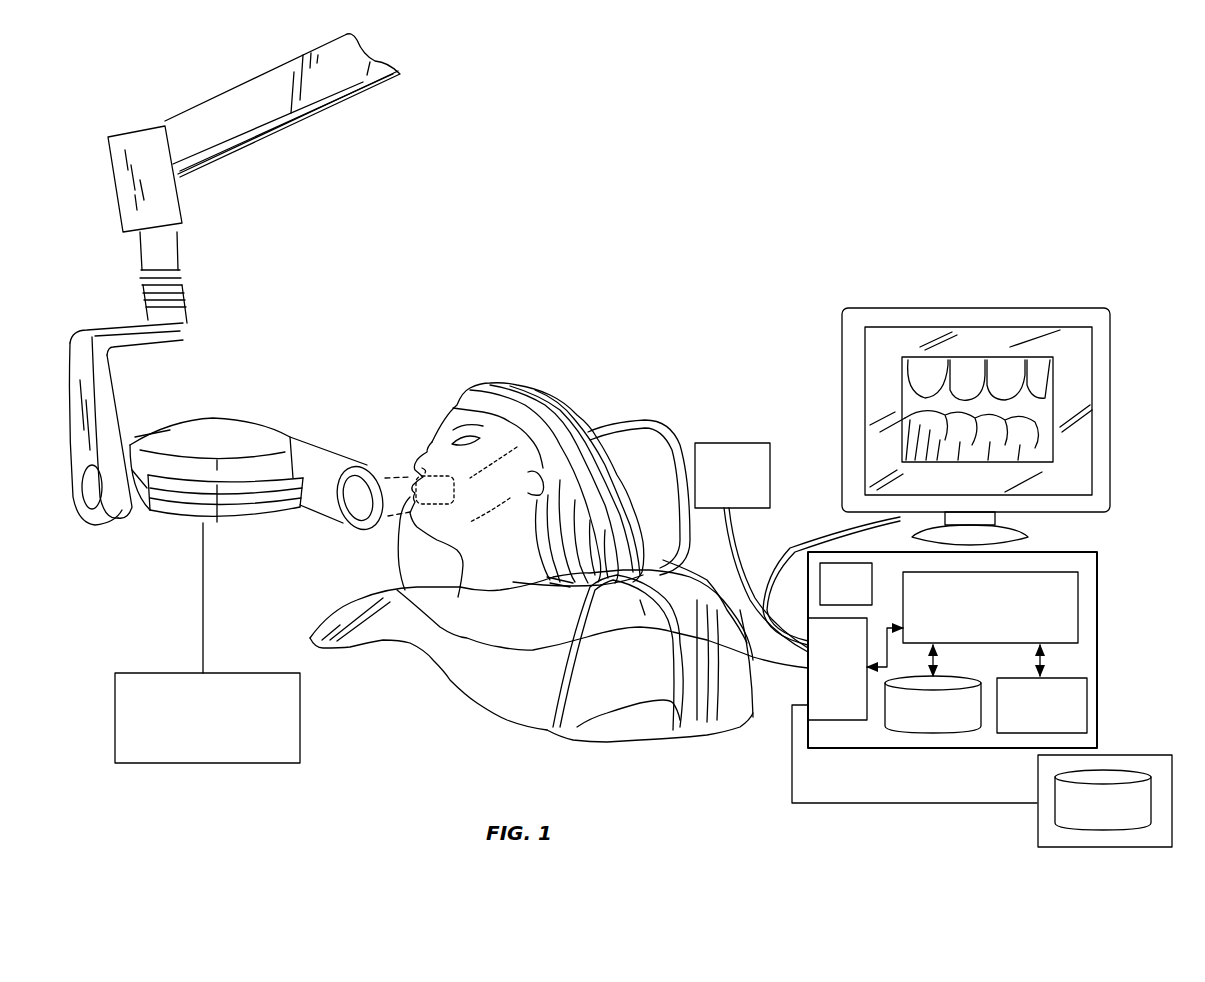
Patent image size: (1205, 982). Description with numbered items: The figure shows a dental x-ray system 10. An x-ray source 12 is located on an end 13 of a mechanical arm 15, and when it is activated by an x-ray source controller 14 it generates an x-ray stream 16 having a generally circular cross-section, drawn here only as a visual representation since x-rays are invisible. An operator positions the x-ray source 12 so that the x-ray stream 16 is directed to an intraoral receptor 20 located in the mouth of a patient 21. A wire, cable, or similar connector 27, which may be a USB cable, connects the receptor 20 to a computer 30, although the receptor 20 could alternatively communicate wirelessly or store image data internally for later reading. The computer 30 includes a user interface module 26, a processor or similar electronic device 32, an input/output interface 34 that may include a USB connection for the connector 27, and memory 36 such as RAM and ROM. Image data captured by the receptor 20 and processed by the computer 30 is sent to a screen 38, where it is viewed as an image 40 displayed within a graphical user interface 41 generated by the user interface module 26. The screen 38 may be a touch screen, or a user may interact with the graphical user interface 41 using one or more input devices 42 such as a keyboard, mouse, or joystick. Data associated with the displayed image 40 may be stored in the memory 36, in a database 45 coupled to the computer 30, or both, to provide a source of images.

The dental x-ray system 10 is at (468, 156).
The x-ray source 12 is at (276, 411).
The end 13 is at (113, 527).
The x-ray source controller 14 is at (208, 766).
The mechanical arm 15 is at (300, 123).
The x-ray stream 16 is at (378, 537).
The intraoral receptor 20 is at (540, 392).
The patient 21 is at (492, 360).
The user interface module 26 is at (832, 562).
The connector 27 is at (503, 648).
The computer 30 is at (979, 641).
The processor 32 is at (1078, 587).
The input/output interface 34 is at (836, 706).
The memory 36 is at (962, 734).
The screen 38 is at (960, 440).
The image 40 is at (1057, 375).
The graphical user interface 41 is at (1025, 345).
The input device 42 is at (745, 443).
The database 45 is at (1092, 821).